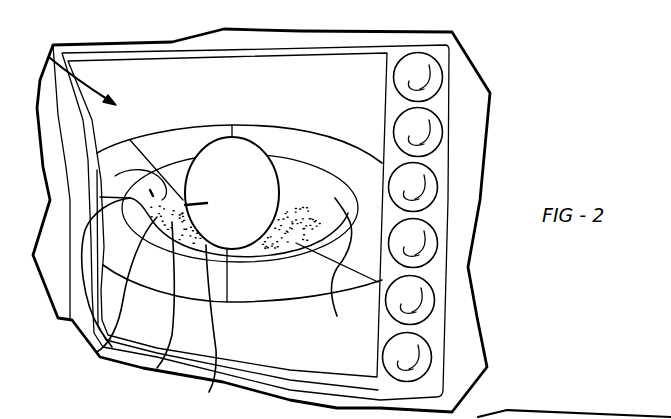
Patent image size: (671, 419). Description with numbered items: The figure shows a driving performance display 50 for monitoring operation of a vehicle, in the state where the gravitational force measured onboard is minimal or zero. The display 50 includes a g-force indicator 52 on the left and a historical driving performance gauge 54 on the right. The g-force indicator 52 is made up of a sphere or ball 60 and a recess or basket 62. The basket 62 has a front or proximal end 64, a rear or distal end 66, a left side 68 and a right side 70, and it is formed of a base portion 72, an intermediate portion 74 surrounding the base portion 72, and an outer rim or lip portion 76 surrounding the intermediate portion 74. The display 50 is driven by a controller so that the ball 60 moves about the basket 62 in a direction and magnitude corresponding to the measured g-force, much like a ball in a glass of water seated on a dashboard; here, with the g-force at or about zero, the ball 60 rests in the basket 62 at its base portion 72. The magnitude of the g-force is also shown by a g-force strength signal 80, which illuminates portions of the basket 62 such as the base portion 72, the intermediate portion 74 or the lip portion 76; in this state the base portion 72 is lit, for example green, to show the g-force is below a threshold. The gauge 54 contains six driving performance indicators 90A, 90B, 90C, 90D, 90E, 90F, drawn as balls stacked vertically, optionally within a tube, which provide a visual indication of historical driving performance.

The driving performance display 50 is at (536, 75).
The g-force indicator 52 is at (50, 60).
The historical driving performance gauge 54 is at (446, 57).
The ball 60 is at (97, 352).
The basket 62 is at (125, 171).
The proximal end 64 is at (210, 330).
The distal end 66 is at (277, 155).
The left side 68 is at (62, 318).
The right side 70 is at (345, 271).
The base portion 72 is at (292, 213).
The intermediate portion 74 is at (312, 210).
The outer rim or lip portion 76 is at (332, 143).
The g-force strength signal 80 is at (157, 368).
The driving performance indicator 90A is at (420, 77).
The driving performance indicator 90B is at (418, 133).
The driving performance indicator 90C is at (417, 188).
The driving performance indicator 90D is at (417, 249).
The driving performance indicator 90E is at (413, 300).
The driving performance indicator 90F is at (410, 362).